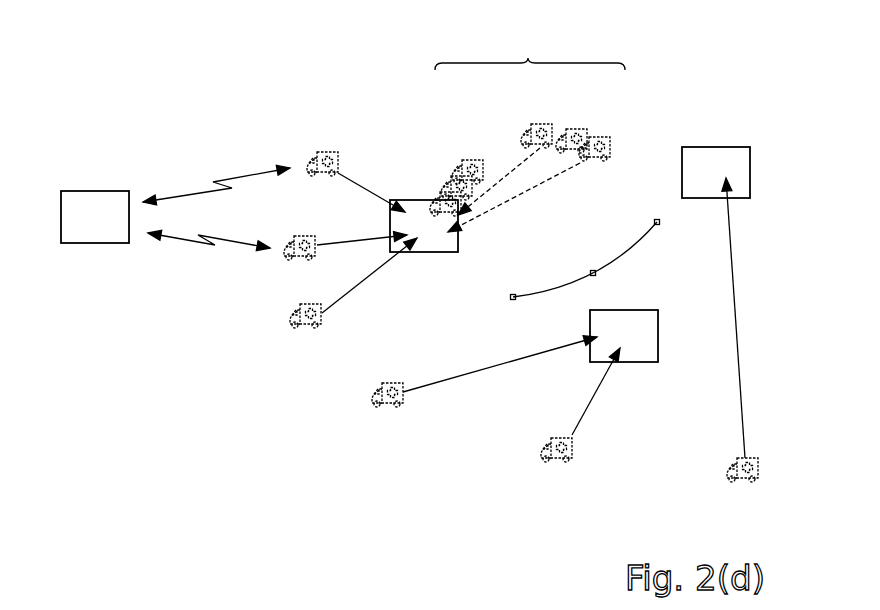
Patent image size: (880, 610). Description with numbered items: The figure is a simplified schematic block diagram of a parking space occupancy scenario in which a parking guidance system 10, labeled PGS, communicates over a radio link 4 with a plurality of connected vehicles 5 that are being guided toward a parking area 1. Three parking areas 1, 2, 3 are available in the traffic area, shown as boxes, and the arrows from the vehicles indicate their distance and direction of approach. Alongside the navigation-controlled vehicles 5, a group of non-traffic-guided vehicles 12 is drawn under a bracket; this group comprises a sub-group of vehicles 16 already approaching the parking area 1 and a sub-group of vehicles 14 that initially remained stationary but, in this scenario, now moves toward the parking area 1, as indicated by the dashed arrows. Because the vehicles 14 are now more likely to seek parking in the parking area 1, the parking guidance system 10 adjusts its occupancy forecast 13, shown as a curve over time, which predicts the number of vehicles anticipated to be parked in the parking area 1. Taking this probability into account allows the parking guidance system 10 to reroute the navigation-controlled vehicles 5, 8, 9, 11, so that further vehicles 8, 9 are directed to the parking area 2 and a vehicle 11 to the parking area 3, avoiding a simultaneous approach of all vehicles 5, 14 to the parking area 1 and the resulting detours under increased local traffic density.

The parking guidance system 10 is at (107, 191).
The radio link 4 is at (250, 173).
The vehicles connected to the parking guidance system 5 is at (330, 152).
The parking area 1 is at (417, 200).
The non-traffic-guided vehicles 12 is at (530, 51).
The sub-group of vehicles approaching the parking area 16 is at (468, 156).
The sub-group of vehicles initially remaining stationary 14 is at (573, 128).
The occupancy forecast 13 is at (562, 283).
The parking area 2 is at (645, 310).
The parking area 3 is at (718, 147).
The navigation-controlled vehicle 8 is at (388, 407).
The navigation-controlled vehicle 9 is at (555, 463).
The navigation-controlled vehicle 11 is at (743, 482).